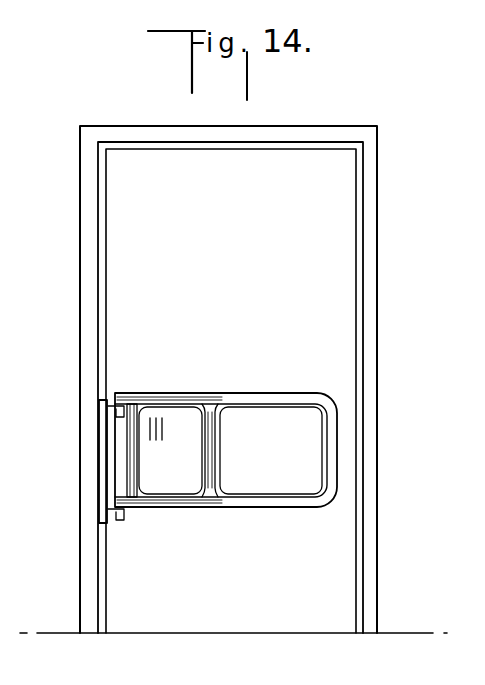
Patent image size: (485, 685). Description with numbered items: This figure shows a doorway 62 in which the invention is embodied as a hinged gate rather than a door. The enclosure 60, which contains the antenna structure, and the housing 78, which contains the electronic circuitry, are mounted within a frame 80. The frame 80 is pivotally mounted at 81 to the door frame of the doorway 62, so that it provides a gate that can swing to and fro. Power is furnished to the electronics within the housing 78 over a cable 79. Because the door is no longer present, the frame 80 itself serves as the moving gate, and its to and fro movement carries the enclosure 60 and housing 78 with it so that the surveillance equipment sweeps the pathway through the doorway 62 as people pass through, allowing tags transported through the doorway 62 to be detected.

The doorway 62 is at (373, 327).
The pivot mounting 81 is at (108, 414).
The frame 80 is at (268, 395).
The cable 79 is at (127, 455).
The housing 78 is at (170, 487).
The enclosure 60 is at (275, 483).